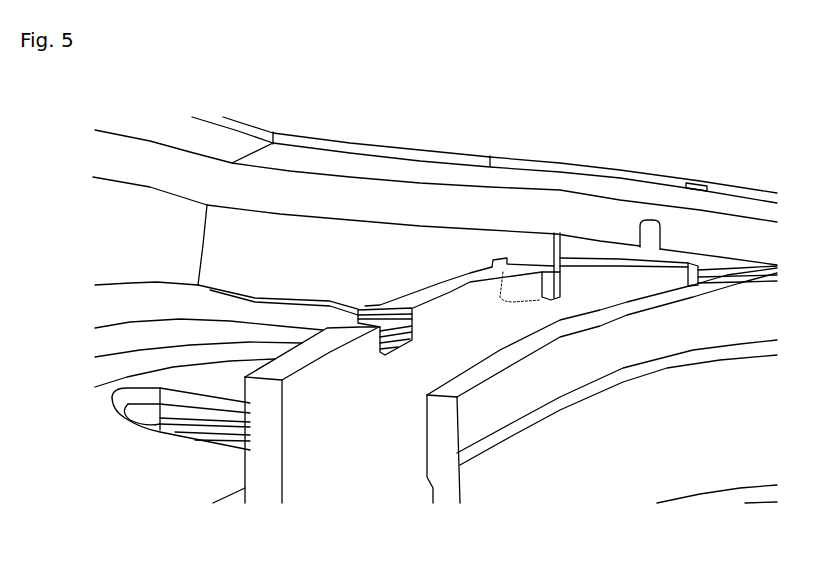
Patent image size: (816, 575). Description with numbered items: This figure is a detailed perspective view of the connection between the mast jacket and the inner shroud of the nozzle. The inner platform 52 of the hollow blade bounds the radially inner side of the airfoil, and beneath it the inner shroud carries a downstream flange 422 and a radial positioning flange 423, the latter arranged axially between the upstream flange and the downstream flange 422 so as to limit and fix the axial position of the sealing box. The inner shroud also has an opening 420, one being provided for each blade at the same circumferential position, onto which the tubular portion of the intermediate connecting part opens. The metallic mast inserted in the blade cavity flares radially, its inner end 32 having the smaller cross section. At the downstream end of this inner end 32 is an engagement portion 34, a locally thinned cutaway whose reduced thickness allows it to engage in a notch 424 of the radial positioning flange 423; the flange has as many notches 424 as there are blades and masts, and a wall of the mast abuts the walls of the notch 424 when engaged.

The inner platform 52 is at (154, 133).
The inner end 32 is at (215, 241).
The engagement portion 34 is at (550, 303).
The notch 424 is at (413, 325).
The opening 420 is at (122, 407).
The radial positioning flange 423 is at (267, 478).
The downstream flange 422 is at (442, 477).